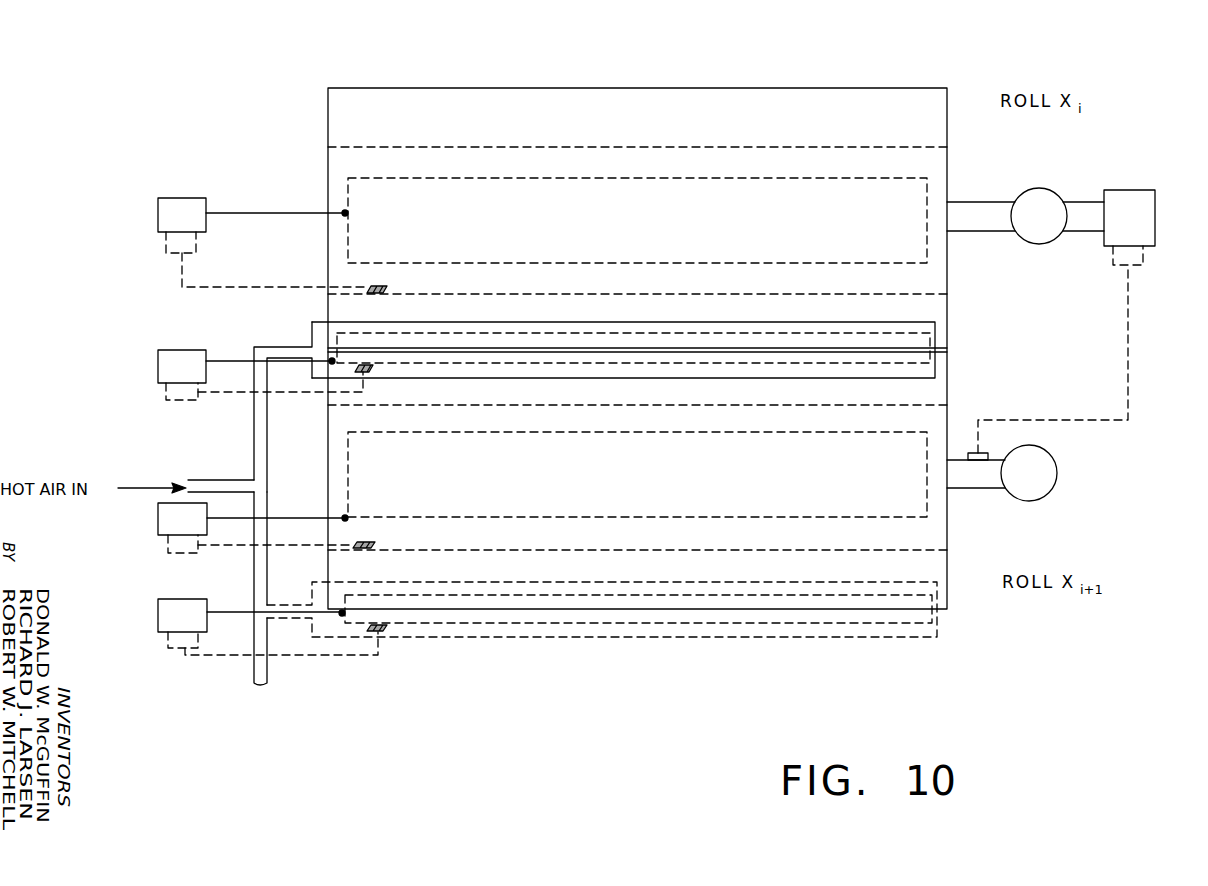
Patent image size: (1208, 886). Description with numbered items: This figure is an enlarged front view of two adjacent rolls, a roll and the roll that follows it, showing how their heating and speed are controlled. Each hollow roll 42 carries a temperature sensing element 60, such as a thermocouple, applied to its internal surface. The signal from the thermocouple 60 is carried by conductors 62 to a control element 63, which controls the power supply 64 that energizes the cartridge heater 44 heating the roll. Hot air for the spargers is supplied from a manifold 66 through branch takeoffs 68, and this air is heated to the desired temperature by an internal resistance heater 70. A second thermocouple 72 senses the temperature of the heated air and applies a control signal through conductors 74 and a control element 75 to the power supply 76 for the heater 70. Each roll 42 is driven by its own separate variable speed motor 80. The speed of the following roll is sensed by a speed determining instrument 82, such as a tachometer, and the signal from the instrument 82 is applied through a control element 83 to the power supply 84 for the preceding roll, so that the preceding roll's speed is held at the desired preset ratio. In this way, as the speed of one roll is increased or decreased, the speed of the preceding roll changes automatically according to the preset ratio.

The hollow roll 42 is at (707, 83).
The cartridge heater 44 is at (433, 178).
The temperature sensing element 60 is at (387, 289).
The conductors 62 is at (245, 287).
The control element 63 is at (165, 253).
The power supply 64 is at (158, 210).
The manifold 66 is at (261, 461).
The branch takeoffs 68 is at (290, 343).
The internal resistance heater 70 is at (468, 333).
The thermocouple 72 is at (372, 369).
The conductors 74 is at (232, 392).
The control element 75 is at (165, 392).
The power supply 76 is at (158, 360).
The variable speed motor 80 is at (1032, 244).
The speed determining instrument 82 is at (985, 453).
The control element 83 is at (1113, 253).
The power supply 84 is at (1143, 250).